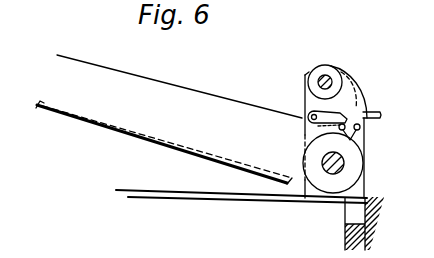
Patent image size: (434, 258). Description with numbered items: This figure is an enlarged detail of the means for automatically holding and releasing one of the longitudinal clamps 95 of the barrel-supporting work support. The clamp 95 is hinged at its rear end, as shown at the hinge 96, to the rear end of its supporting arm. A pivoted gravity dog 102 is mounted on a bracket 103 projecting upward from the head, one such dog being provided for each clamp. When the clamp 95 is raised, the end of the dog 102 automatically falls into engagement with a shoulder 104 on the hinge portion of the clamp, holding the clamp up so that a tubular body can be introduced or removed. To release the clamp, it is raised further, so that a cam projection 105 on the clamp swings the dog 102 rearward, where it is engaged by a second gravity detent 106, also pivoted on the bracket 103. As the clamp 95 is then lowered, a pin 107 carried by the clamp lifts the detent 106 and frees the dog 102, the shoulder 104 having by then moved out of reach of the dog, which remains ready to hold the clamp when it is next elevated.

The longitudinal clamp 95 is at (198, 97).
The hinge 96 is at (355, 178).
The pivoted gravity dog 102 is at (360, 90).
The bracket 103 is at (305, 100).
The shoulder 104 is at (368, 142).
The cam projection 105 is at (317, 125).
The gravity detent 106 is at (368, 110).
The pin 107 is at (347, 129).